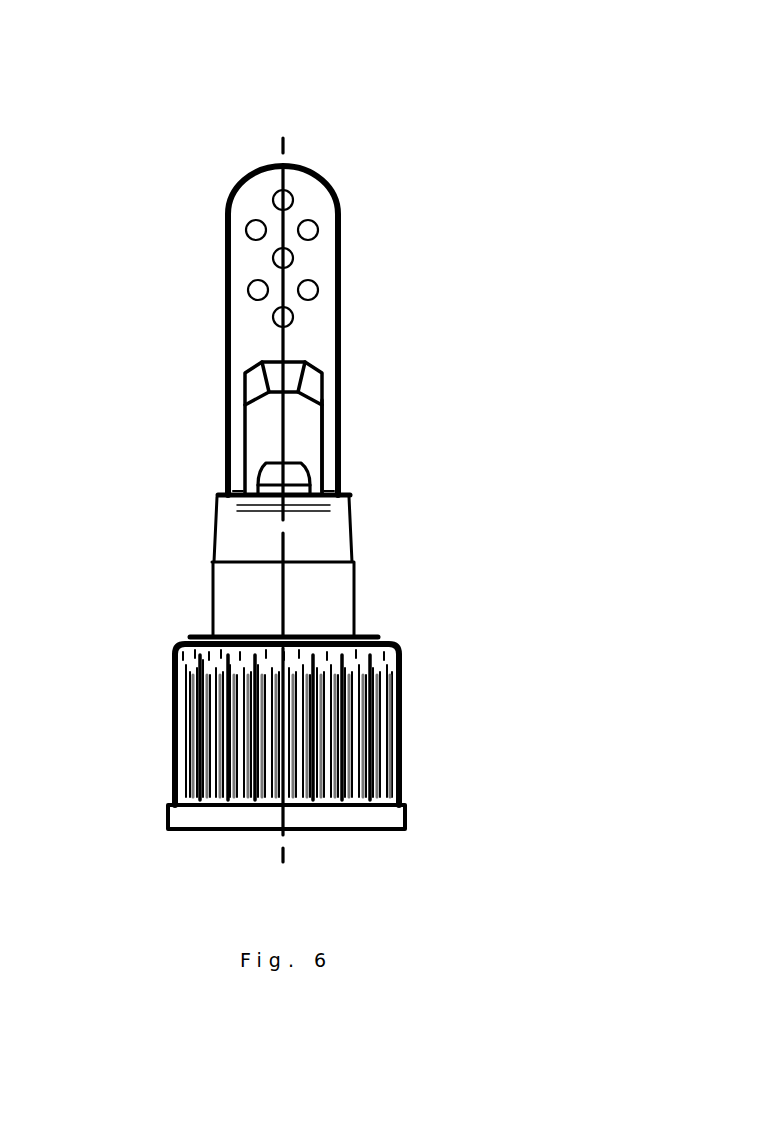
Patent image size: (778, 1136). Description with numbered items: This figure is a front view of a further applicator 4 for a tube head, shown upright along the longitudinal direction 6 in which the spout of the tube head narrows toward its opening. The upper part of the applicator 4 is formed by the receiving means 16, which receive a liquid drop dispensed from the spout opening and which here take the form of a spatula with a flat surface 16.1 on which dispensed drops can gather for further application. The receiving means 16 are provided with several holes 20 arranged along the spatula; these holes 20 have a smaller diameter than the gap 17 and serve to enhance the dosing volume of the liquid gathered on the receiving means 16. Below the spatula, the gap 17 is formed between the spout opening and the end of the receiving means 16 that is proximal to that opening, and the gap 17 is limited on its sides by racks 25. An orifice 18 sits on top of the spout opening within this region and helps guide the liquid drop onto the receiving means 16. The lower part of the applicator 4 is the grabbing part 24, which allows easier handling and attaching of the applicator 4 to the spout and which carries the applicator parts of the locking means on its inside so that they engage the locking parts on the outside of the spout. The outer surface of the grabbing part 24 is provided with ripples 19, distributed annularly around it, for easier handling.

The applicator 4 is at (398, 96).
The longitudinal direction 6 is at (287, 606).
The receiving means 16 is at (342, 303).
The flat surface 16.1 is at (266, 337).
The gap 17 is at (265, 433).
The orifice 18 is at (300, 474).
The ripples 19 is at (176, 742).
The holes 20 is at (314, 231).
The grabbing part 24 is at (424, 756).
The racks 25 is at (328, 450).